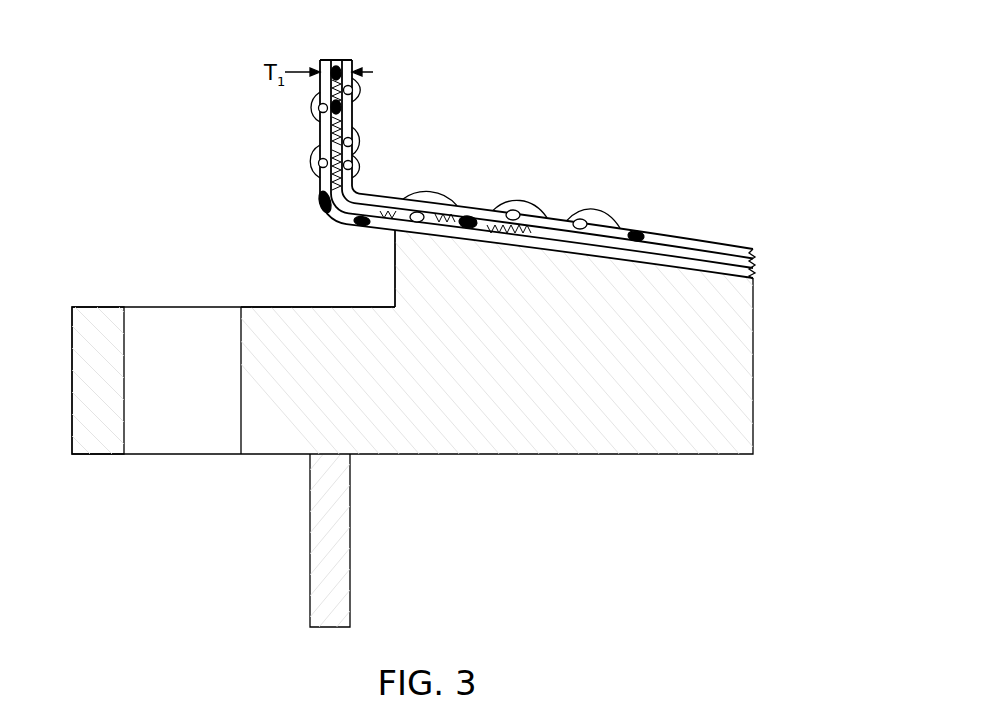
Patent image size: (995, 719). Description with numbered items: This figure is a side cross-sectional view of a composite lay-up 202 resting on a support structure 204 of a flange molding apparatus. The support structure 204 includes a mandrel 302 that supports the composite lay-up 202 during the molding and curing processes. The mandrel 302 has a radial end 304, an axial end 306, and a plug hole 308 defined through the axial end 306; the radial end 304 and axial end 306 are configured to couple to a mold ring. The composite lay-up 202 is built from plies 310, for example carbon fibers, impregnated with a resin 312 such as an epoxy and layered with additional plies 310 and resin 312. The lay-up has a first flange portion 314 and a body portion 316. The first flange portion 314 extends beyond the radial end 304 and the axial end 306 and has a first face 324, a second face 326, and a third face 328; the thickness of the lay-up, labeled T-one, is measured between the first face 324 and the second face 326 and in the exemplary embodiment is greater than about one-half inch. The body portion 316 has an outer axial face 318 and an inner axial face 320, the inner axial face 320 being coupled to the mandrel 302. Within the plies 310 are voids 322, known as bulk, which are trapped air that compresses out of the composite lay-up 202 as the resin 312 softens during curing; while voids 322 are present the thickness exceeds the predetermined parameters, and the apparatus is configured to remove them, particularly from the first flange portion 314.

The composite lay-up 202 is at (650, 246).
The support structure 204 is at (558, 465).
The mandrel 302 is at (638, 432).
The radial end 304 is at (393, 243).
The axial end 306 is at (313, 306).
The plug hole 308 is at (167, 300).
The plies 310 is at (368, 200).
The resin 312 is at (348, 60).
The first flange portion 314 is at (362, 106).
The body portion 316 is at (558, 212).
The outer axial face 318 is at (467, 214).
The inner axial face 320 is at (740, 283).
The voids 322 is at (514, 208).
The first face 324 is at (318, 136).
The second face 326 is at (355, 141).
The third face 328 is at (333, 52).